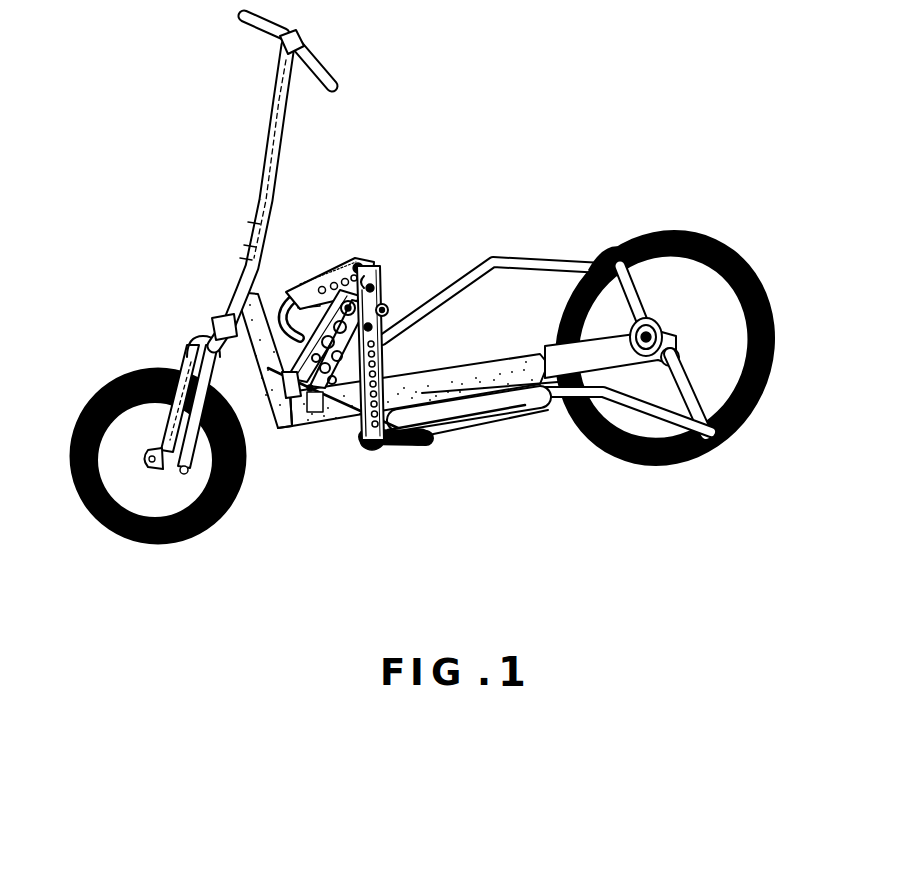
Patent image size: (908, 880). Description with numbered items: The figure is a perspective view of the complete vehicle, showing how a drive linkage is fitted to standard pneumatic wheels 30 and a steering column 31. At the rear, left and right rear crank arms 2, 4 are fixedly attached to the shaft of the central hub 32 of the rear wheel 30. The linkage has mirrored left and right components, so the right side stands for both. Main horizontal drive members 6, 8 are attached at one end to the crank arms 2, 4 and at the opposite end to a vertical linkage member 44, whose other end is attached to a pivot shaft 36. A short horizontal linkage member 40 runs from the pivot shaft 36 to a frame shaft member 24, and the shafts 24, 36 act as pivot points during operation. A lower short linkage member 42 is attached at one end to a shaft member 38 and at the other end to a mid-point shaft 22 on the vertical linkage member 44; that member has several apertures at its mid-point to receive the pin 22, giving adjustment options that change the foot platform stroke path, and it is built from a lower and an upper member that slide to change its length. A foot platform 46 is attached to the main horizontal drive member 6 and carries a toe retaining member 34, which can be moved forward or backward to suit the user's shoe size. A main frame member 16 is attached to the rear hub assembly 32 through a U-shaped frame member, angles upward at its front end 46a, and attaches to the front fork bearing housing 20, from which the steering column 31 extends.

The left rear crank arm 2 is at (697, 390).
The right rear crank arm 4 is at (658, 233).
The main horizontal drive member 6 is at (618, 462).
The main horizontal drive member 8 is at (443, 298).
The main frame member 16 is at (465, 383).
The front fork bearing housing 20 is at (213, 303).
The mid-point shaft 22 is at (383, 308).
The frame shaft member 24 is at (297, 294).
The rear wheel 30 is at (773, 297).
The steering column 31 is at (262, 172).
The central hub 32 is at (664, 335).
The toe retaining member 34 is at (430, 440).
The pivot shaft 36 is at (370, 272).
The shaft member 38 is at (294, 422).
The short horizontal linkage member 40 is at (338, 265).
The lower short linkage member 42 is at (309, 391).
The vertical linkage member 44 is at (358, 410).
The foot platform 46 is at (498, 428).
The front end of main frame member 46a is at (260, 360).